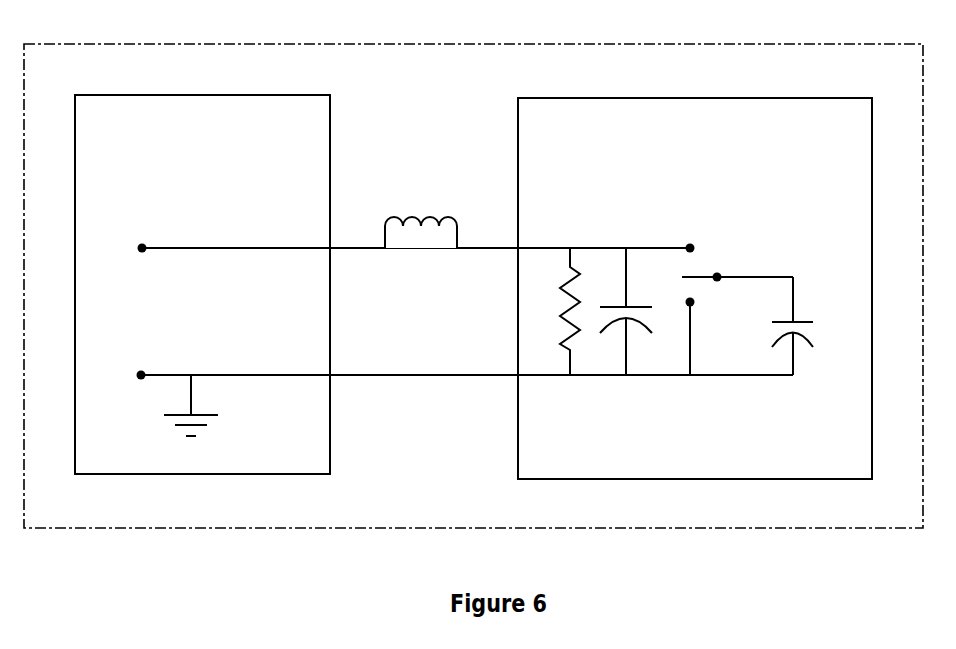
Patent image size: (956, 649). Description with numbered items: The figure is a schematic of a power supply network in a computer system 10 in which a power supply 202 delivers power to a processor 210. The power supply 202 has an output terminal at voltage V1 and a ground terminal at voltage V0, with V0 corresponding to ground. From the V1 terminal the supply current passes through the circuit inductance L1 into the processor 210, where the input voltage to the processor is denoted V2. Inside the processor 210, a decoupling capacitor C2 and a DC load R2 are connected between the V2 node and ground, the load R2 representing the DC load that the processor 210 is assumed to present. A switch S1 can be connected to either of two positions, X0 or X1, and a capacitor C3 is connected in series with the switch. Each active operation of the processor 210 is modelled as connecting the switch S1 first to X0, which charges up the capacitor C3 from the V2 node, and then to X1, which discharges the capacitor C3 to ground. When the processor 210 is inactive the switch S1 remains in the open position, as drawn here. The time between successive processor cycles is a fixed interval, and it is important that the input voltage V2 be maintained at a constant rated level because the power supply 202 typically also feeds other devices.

The system 10 is at (473, 286).
The power supply 202 is at (202, 284).
The processor 210 is at (695, 288).
The circuit inductance L1 is at (421, 246).
The DC load resistance R2 is at (555, 311).
The decoupling capacitor C2 is at (631, 311).
The capacitor C3 is at (785, 326).
The switch S1 is at (737, 263).
The switch position X0 is at (677, 236).
The switch position X1 is at (705, 337).
The power supply voltage V1 is at (129, 231).
The ground voltage V0 is at (129, 357).
The processor input voltage V2 is at (538, 232).